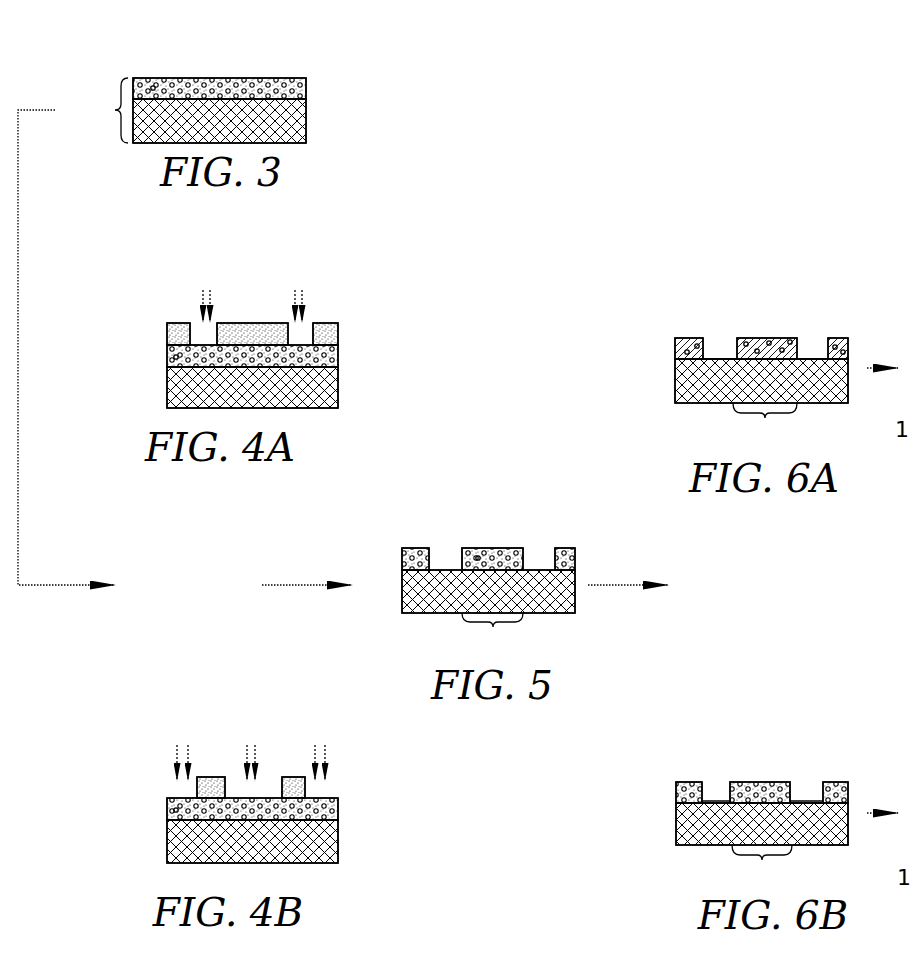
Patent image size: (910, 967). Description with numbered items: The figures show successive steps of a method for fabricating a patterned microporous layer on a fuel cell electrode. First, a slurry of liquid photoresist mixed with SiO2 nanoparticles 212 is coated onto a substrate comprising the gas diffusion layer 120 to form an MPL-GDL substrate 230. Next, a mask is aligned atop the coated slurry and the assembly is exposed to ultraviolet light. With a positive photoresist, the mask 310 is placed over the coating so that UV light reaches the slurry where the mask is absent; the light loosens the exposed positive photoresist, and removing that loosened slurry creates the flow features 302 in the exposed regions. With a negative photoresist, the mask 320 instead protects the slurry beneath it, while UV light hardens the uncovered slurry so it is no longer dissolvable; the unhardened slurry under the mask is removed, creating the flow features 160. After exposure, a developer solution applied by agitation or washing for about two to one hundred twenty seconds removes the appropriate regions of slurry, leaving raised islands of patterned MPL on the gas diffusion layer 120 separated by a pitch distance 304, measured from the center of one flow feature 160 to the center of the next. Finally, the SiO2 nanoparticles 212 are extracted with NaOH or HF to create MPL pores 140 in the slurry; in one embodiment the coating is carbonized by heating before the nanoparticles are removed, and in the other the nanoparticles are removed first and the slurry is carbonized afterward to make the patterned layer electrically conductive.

In FIG. 3, the gas diffusion layer 120 is at (310, 127).
In FIG. 4A, the gas diffusion layer 120 is at (169, 386).
In FIG. 4B, the gas diffusion layer 120 is at (169, 843).
In FIG. 5, the gas diffusion layer 120 is at (401, 595).
In FIG. 6A, the gas diffusion layer 120 is at (676, 383).
In FIG. 6B, the gas diffusion layer 120 is at (676, 828).
In FIG. 3, the SiO2 nanoparticles 212 is at (154, 78).
In FIG. 4A, the SiO2 nanoparticles 212 is at (171, 353).
In FIG. 4B, the SiO2 nanoparticles 212 is at (171, 806).
In FIG. 5, the SiO2 nanoparticles 212 is at (476, 548).
In FIG. 6A, the SiO2 nanoparticles 212 is at (697, 336).
In FIG. 3, the MPL-GDL substrate 230 is at (99, 110).
In FIG. 4A, the mask 310 is at (179, 321).
In FIG. 4A, the flow pathways or flow features 302 is at (286, 338).
In FIG. 4B, the flow pathways or flow features 302 is at (234, 794).
In FIG. 4B, the mask 320 is at (276, 777).
In FIG. 5, the pitch distance 304 is at (492, 634).
In FIG. 6A, the pitch distance 304 is at (765, 426).
In FIG. 6B, the pitch distance 304 is at (762, 866).
In FIG. 6A, the flow features 160 is at (807, 356).
In FIG. 6B, the flow features 160 is at (799, 796).
In FIG. 6B, the MPL pores 140 is at (725, 797).